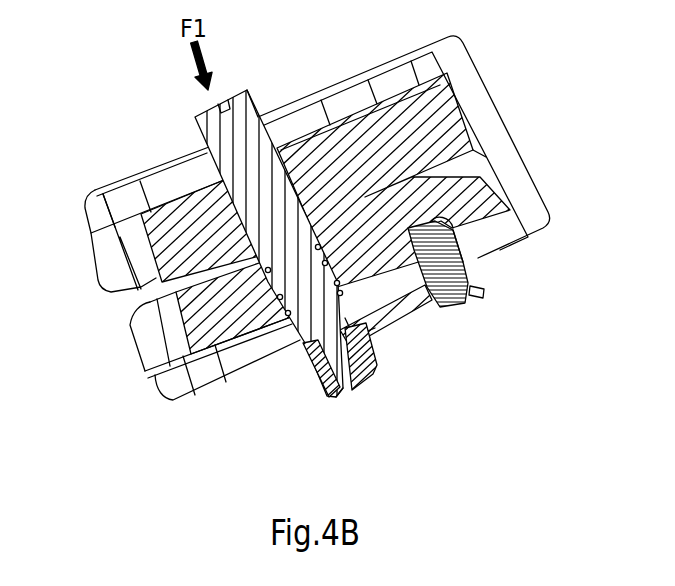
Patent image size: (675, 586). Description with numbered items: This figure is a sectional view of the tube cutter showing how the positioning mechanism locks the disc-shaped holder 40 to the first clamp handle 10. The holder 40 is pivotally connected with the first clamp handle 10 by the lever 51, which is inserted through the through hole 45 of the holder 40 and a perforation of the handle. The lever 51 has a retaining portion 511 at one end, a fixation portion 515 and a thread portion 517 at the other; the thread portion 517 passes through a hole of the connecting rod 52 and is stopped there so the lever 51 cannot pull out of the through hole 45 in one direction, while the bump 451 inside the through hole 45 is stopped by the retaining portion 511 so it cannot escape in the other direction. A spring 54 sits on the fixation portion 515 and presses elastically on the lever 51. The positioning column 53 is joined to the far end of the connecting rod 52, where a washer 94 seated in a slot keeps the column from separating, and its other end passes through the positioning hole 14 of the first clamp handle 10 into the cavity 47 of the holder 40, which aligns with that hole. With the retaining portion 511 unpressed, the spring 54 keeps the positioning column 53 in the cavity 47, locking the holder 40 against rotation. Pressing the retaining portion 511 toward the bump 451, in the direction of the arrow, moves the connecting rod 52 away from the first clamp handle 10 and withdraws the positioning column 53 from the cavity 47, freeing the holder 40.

The first clamp handle 10 is at (481, 84).
The positioning hole 14 is at (470, 264).
The holder 40 is at (140, 340).
The through hole 45 is at (222, 199).
The bump 451 is at (90, 248).
The cavity 47 is at (457, 232).
The lever 51 is at (194, 116).
The retaining portion 511 is at (250, 89).
The fixation portion 515 is at (369, 337).
The thread portion 517 is at (355, 390).
The connecting rod 52 is at (409, 315).
The positioning column 53 is at (463, 308).
The spring 54 is at (283, 315).
The washer 94 is at (486, 296).